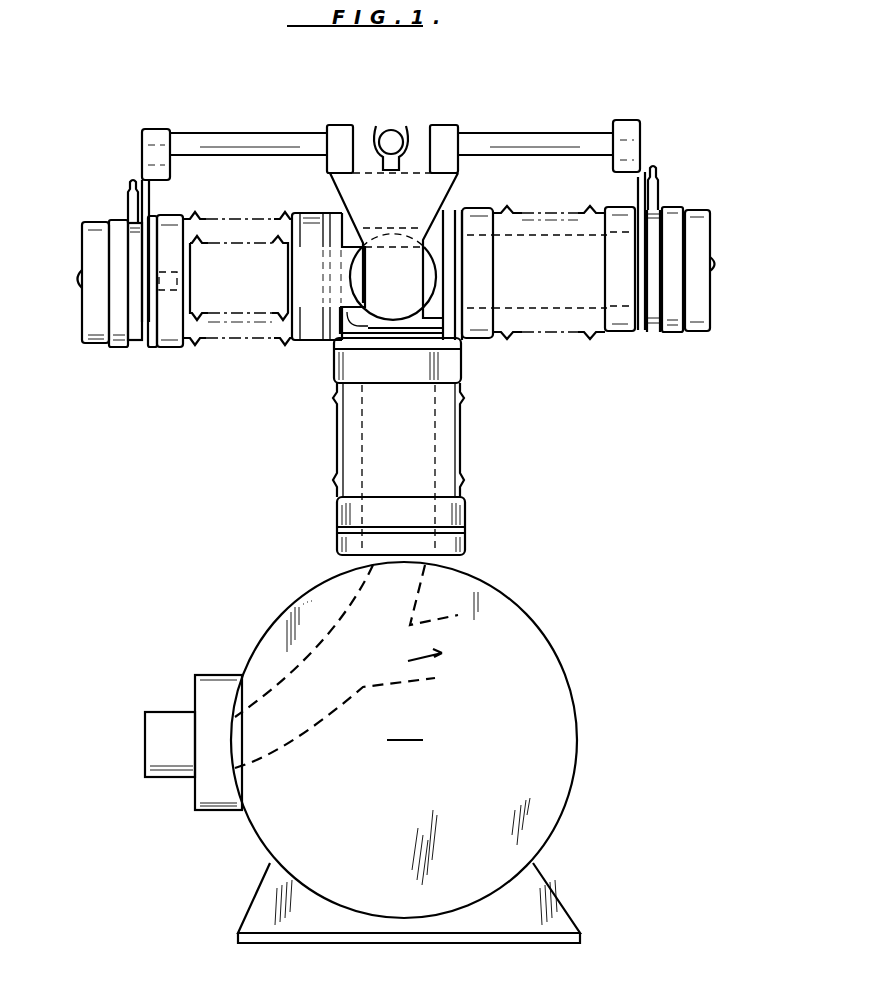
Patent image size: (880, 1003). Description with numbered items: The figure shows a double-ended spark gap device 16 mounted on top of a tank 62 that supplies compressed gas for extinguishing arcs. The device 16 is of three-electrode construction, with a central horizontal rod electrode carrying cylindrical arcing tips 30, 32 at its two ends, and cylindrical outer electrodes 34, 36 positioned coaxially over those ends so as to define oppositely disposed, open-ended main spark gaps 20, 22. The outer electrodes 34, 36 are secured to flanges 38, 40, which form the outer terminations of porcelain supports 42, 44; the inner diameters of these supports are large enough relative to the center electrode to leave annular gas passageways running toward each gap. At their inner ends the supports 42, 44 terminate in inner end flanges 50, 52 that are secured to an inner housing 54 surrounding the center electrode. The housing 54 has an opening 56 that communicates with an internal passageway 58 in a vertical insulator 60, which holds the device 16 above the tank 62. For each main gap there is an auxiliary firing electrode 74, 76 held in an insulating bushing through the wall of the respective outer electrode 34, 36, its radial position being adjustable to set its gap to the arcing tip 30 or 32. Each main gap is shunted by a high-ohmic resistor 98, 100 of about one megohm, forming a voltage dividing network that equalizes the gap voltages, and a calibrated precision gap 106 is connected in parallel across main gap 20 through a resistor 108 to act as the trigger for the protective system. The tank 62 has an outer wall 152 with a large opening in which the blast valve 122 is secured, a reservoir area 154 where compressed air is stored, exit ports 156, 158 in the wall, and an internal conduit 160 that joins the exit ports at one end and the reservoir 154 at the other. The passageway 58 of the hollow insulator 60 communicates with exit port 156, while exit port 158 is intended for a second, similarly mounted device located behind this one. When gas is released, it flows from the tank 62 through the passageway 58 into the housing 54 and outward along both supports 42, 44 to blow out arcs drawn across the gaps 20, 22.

The spark gap device 16 is at (548, 334).
The main spark gap 20 is at (65, 261).
The main spark gap 22 is at (729, 238).
The arcing tip 30 is at (80, 280).
The arcing tip 32 is at (717, 266).
The outer electrode 34 is at (98, 222).
The outer electrode 36 is at (701, 210).
The flange 38 is at (170, 216).
The flange 40 is at (615, 206).
The porcelain support 42 is at (222, 343).
The porcelain support 44 is at (507, 333).
The inner end flange 50 is at (308, 214).
The inner end flange 52 is at (480, 212).
The inner housing 54 is at (435, 227).
The opening 56 is at (337, 333).
The internal passageway 58 is at (431, 445).
The vertical insulator 60 is at (337, 392).
The tank 62 is at (553, 619).
The auxiliary firing electrode 74 is at (126, 188).
The auxiliary firing electrode 76 is at (661, 192).
The resistor 98 is at (257, 140).
The resistor 100 is at (545, 140).
The calibrated precision gap 106 is at (228, 245).
The resistor 108 is at (417, 108).
The blast valve 122 is at (177, 712).
The outer wall 152 is at (258, 640).
The reservoir area 154 is at (405, 728).
The exit port 156 is at (395, 566).
The exit port 158 is at (461, 655).
The internal conduit 160 is at (294, 742).